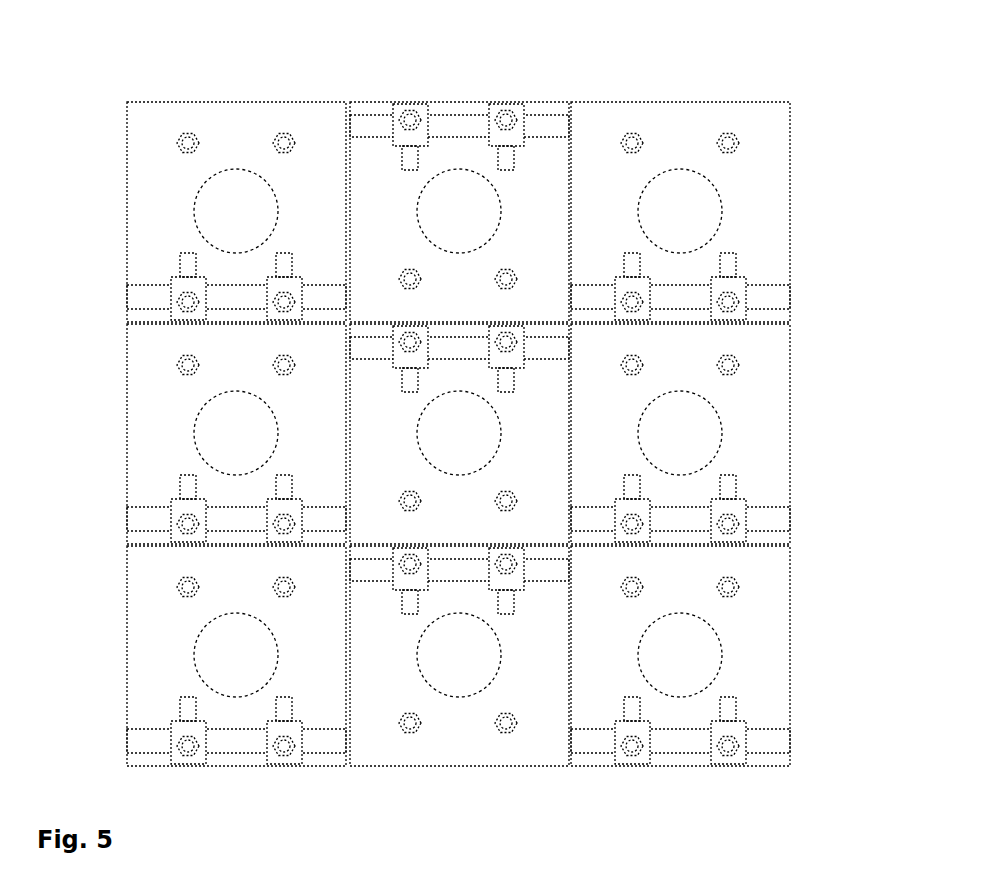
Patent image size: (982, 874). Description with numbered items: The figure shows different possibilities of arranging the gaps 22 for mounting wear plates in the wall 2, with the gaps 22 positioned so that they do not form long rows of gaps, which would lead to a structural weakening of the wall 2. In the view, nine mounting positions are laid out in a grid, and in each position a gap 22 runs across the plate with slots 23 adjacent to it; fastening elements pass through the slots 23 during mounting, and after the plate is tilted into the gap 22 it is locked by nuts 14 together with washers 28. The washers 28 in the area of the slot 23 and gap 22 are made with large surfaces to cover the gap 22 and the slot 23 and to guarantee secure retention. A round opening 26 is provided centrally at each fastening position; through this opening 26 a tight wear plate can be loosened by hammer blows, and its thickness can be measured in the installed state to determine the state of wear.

The wall 2 is at (243, 140).
The nut 14 is at (283, 137).
The gap 22 is at (140, 295).
The slot 23 is at (283, 478).
The round opening 26 is at (693, 204).
The washer 28 is at (497, 108).